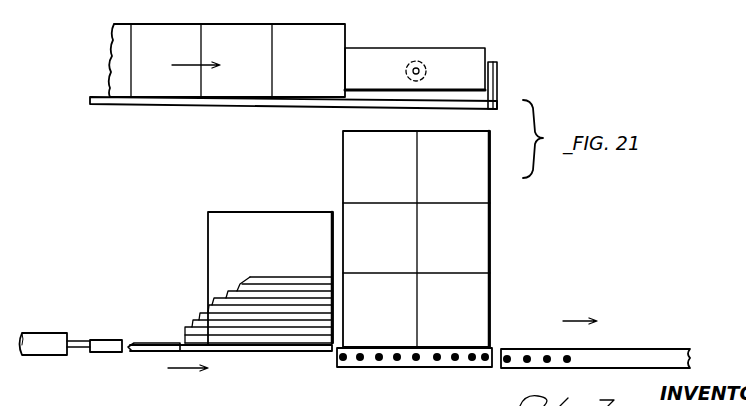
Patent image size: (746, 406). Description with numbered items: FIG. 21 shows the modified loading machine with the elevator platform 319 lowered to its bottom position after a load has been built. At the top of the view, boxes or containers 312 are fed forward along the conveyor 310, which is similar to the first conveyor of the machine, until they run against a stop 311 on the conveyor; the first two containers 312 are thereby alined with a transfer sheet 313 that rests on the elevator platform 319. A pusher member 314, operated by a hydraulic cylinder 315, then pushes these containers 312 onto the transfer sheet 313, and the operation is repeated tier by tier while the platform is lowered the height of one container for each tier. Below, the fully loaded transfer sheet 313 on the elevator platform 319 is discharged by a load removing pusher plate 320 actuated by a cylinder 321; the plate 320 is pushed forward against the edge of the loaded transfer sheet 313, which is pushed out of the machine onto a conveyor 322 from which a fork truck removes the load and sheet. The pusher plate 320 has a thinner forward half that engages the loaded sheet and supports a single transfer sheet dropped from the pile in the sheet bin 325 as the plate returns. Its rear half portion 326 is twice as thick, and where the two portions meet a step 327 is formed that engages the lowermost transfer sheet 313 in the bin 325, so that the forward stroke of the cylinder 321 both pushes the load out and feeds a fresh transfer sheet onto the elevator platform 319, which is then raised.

The conveyor 310 is at (146, 107).
The stop 311 is at (497, 70).
The containers 312 is at (299, 185).
The transfer sheet 313 is at (235, 297).
The pusher member 314 is at (466, 48).
The hydraulic cylinder 315 is at (418, 61).
The elevator platform 319 is at (365, 368).
The load removing pusher plate 320 is at (285, 352).
The cylinder 321 is at (46, 340).
The conveyor 322 is at (595, 343).
The sheet bin 325 is at (270, 278).
The rear half portion 326 is at (110, 353).
The step 327 is at (164, 346).